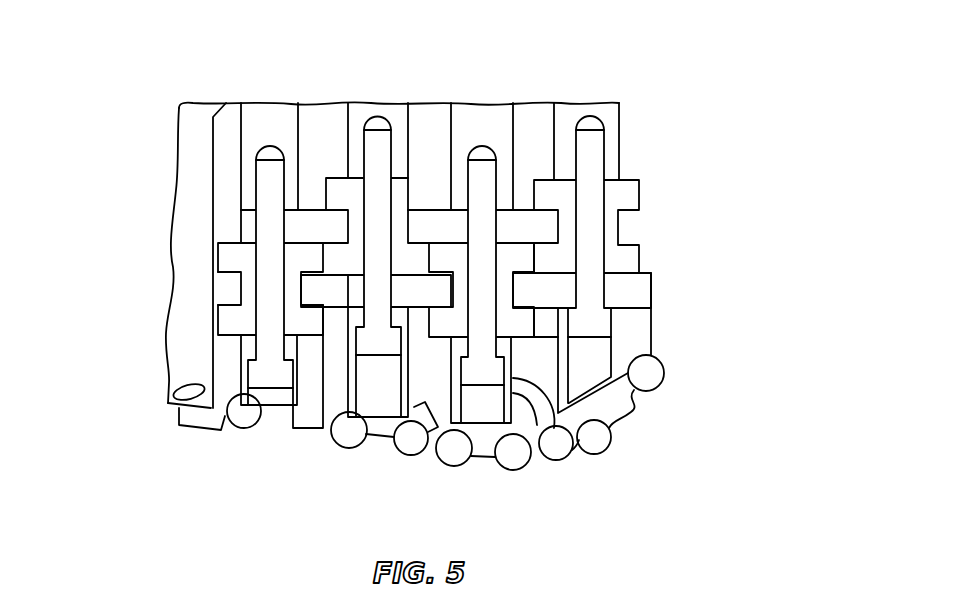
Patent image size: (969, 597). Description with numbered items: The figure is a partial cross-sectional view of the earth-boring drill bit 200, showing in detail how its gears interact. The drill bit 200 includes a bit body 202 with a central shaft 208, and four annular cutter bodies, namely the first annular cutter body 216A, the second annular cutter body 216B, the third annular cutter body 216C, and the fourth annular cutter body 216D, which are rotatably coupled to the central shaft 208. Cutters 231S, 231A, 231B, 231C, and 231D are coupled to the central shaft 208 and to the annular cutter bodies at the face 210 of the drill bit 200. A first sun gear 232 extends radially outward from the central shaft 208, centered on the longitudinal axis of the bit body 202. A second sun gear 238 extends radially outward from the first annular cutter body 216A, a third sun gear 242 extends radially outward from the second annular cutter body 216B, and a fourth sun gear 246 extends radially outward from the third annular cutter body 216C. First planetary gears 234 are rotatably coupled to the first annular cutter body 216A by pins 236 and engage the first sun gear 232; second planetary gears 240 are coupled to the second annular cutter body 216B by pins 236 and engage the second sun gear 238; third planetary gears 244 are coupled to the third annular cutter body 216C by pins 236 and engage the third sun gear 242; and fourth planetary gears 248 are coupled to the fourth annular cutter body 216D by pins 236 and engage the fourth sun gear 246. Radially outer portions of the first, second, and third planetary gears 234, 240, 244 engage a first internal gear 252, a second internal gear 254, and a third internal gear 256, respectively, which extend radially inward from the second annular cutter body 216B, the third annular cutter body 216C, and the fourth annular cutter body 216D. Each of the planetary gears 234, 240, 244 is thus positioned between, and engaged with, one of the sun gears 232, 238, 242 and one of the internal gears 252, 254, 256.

The earth-boring drill bit 200 is at (688, 213).
The bit body 202 is at (143, 218).
The central shaft 208 is at (182, 268).
The face 210 is at (552, 478).
The first annular cutter body 216A is at (273, 98).
The second annular cutter body 216B is at (378, 98).
The third annular cutter body 216C is at (485, 97).
The fourth annular cutter body 216D is at (590, 97).
The cutter 231A is at (245, 417).
The cutter 231B is at (347, 433).
The cutter 231C is at (453, 452).
The cutter 231D is at (650, 376).
The cutter 231S is at (193, 417).
The first sun gear 232 is at (227, 290).
The first planetary gears 234 is at (233, 318).
The pins 236 is at (265, 258).
The second sun gear 238 is at (308, 222).
The second planetary gears 240 is at (417, 193).
The third sun gear 242 is at (422, 293).
The third planetary gears 244 is at (522, 320).
The fourth sun gear 246 is at (543, 220).
The fourth planetary gears 248 is at (627, 255).
The first internal gear 252 is at (335, 330).
The second internal gear 254 is at (437, 190).
The third internal gear 256 is at (548, 322).